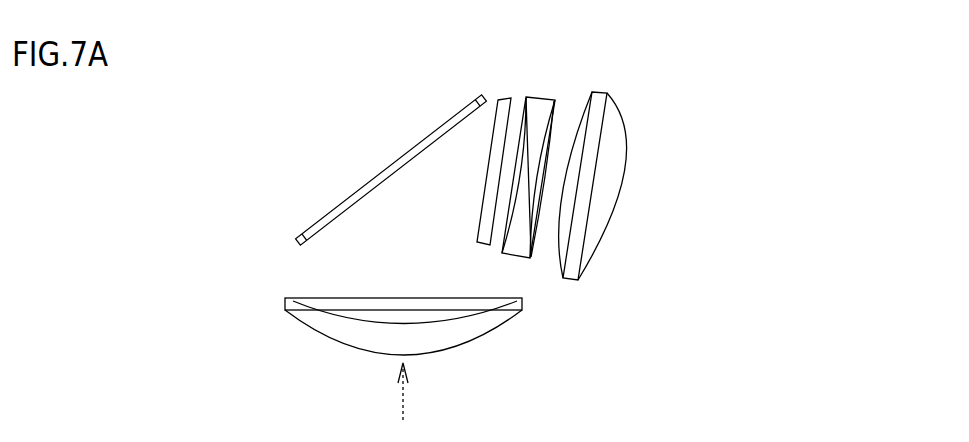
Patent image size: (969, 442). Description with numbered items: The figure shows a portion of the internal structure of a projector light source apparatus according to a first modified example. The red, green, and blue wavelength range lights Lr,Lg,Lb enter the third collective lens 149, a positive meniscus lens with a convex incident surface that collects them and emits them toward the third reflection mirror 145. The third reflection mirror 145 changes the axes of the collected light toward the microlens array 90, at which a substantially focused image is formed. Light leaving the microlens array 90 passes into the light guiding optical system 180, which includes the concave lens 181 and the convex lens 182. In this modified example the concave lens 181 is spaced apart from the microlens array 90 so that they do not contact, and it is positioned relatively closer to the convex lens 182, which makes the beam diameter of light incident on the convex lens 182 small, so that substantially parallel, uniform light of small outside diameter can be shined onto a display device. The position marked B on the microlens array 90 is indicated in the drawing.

The third reflection mirror 145 is at (388, 167).
The microlens array 90 is at (503, 97).
The light beam position B is at (483, 198).
The light guiding optical system 180 is at (628, 152).
The concave lens 181 is at (542, 98).
The convex lens 182 is at (623, 148).
The third collective lens 149 is at (475, 341).
The red, green, and blue wavelength range lights Lr,Lg,Lb is at (456, 393).